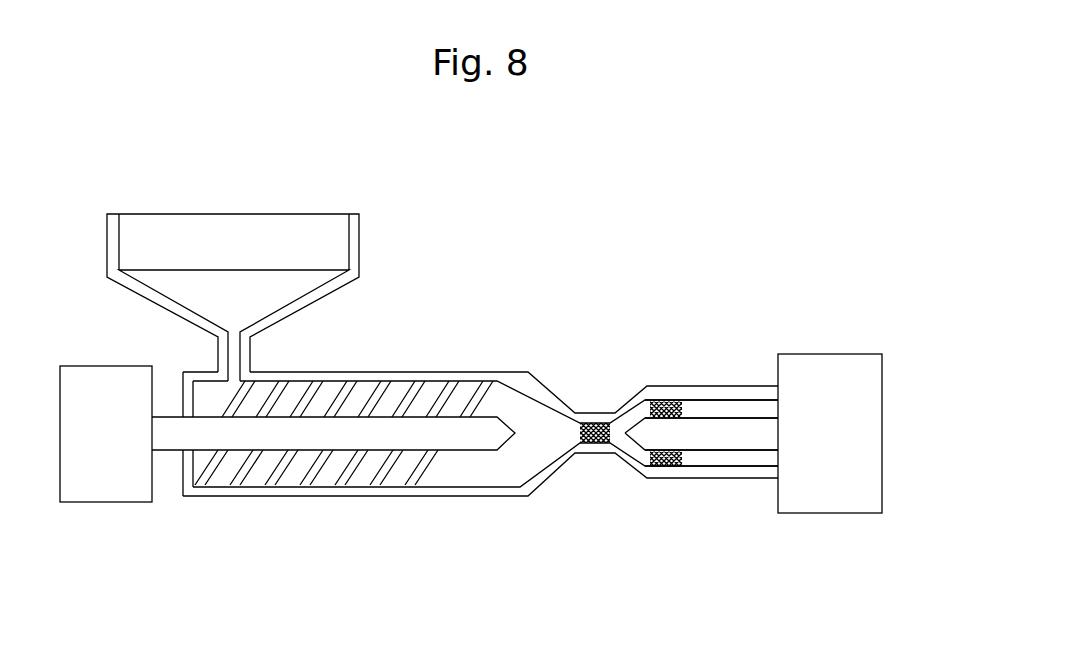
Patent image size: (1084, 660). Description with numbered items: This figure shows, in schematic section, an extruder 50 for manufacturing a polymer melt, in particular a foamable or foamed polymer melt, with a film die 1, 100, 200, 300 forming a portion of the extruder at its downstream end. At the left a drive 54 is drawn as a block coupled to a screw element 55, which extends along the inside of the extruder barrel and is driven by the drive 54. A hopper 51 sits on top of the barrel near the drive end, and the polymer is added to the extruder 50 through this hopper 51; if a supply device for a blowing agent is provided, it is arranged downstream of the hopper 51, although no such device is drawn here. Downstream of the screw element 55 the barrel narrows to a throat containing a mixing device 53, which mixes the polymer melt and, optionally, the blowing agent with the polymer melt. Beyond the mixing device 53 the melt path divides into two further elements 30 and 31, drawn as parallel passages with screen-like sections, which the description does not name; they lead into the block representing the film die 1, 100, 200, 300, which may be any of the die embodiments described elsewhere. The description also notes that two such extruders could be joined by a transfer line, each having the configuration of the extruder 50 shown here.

The film die 1 is at (818, 323).
The film die 100 is at (830, 433).
The film die 200 is at (830, 433).
The film die 300 is at (807, 405).
The upper flow channel 30 is at (715, 407).
The lower flow channel 31 is at (715, 455).
The extruder 50 is at (422, 325).
The hopper 51 is at (168, 242).
The mixing device 53 is at (602, 445).
The drive 54 is at (117, 472).
The screw element 55 is at (350, 477).